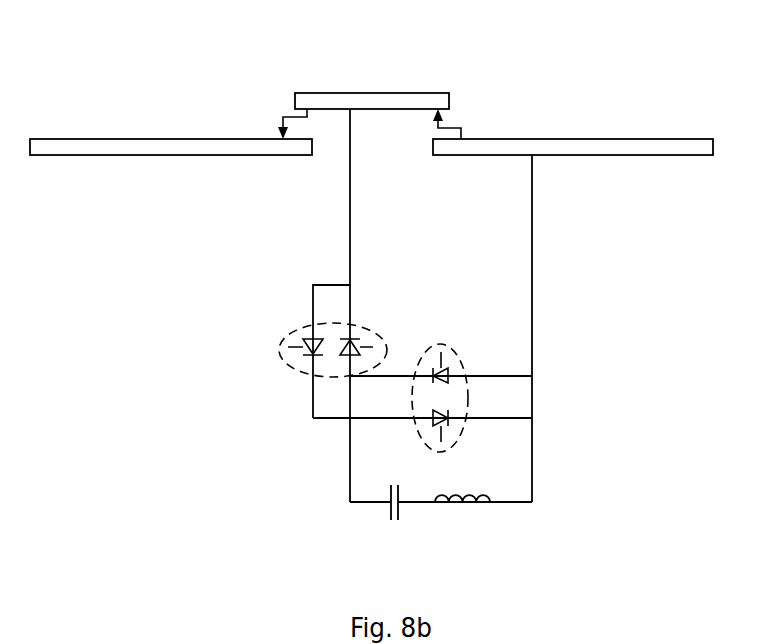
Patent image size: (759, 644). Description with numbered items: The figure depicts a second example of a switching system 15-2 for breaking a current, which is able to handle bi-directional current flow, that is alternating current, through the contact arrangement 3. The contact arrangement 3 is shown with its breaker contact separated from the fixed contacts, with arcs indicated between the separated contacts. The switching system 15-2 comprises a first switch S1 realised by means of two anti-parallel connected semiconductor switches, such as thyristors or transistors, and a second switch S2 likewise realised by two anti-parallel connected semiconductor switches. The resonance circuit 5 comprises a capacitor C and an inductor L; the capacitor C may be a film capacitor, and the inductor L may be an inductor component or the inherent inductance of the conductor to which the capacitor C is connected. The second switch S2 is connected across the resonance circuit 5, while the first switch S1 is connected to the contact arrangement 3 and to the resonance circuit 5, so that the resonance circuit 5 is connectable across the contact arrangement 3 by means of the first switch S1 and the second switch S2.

The contact arrangement 3 is at (302, 80).
The switching system 15-2 is at (546, 66).
The first switch S1 is at (325, 321).
The second switch S2 is at (468, 397).
The capacitor C is at (396, 502).
The inductor L is at (465, 517).
The resonance circuit 5 is at (455, 522).